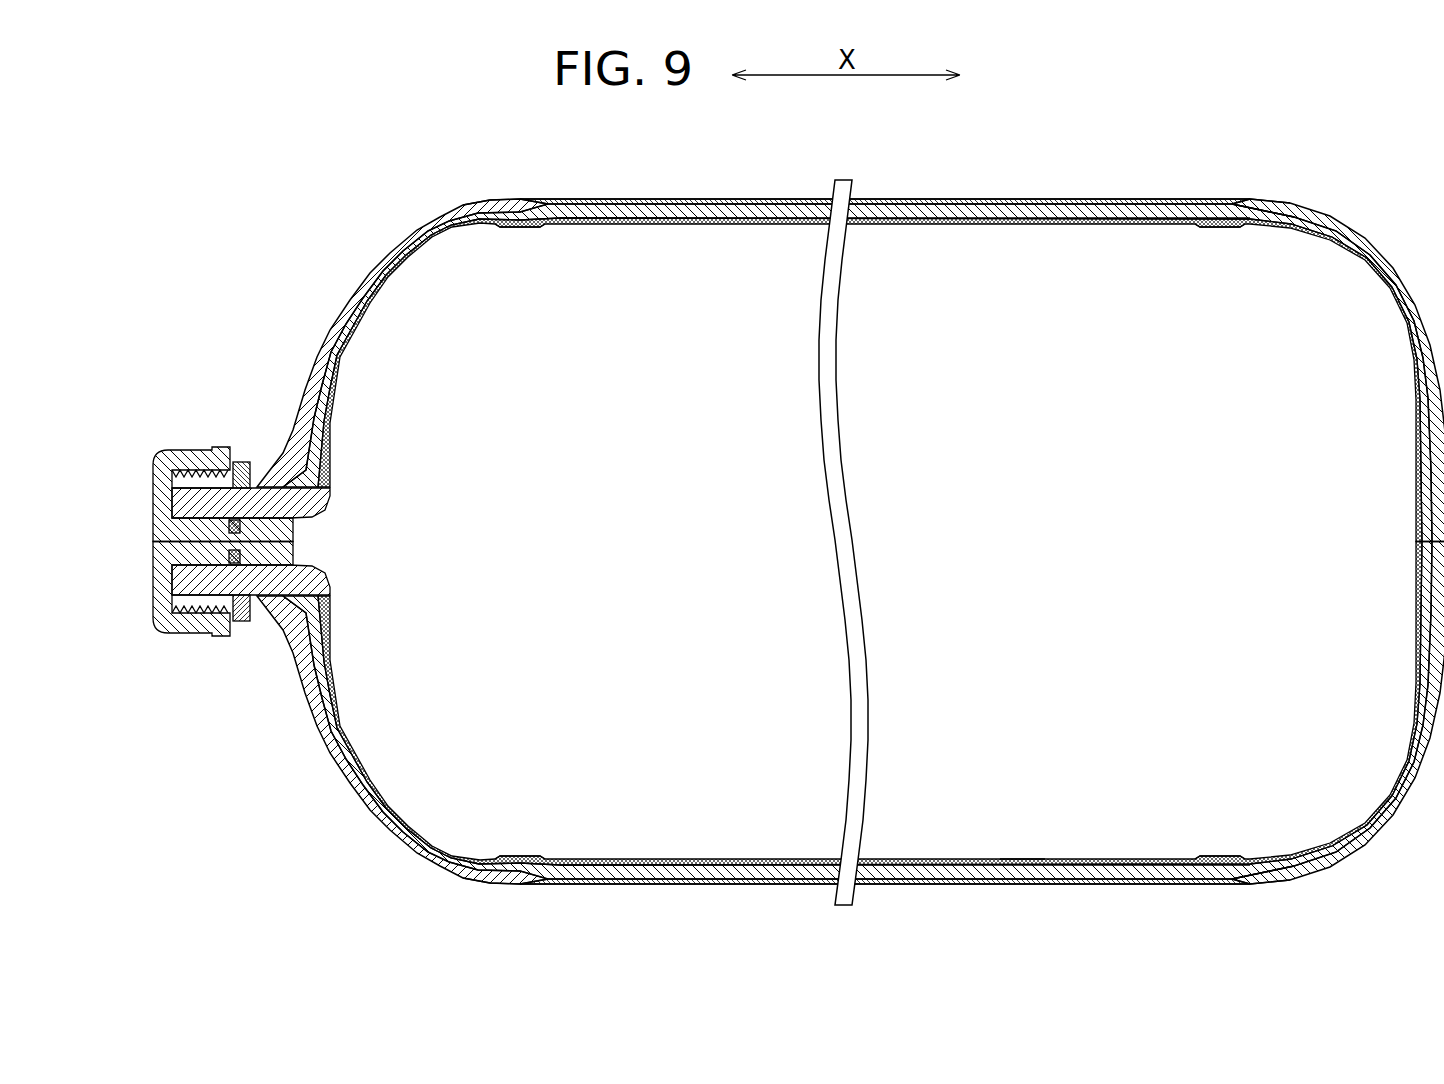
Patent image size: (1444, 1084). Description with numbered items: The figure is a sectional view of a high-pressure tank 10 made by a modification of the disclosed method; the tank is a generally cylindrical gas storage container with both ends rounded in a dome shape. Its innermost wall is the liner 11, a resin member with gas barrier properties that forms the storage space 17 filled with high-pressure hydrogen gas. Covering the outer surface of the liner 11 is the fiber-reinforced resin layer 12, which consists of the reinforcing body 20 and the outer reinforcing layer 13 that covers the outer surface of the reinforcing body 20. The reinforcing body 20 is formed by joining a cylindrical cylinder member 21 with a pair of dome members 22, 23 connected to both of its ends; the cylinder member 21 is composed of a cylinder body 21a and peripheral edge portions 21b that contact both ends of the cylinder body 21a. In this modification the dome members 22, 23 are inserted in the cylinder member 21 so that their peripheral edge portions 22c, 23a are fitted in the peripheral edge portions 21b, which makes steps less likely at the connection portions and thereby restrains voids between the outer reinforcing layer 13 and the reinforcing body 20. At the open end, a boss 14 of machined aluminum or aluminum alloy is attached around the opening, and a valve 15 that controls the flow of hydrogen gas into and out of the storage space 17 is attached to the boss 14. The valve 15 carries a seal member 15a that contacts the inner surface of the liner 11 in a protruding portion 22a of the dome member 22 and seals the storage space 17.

The high-pressure tank 10 is at (1282, 129).
The liner 11 is at (660, 224).
The fiber-reinforced resin layer 12 is at (1008, 139).
The outer reinforcing layer 13 is at (928, 200).
The reinforcing body 20 is at (985, 210).
The cylinder member 21 is at (885, 226).
The cylinder body 21a is at (1108, 225).
The peripheral edge portions 21b is at (487, 204).
The dome member 22 is at (336, 400).
The protruding portion 22a is at (210, 500).
The peripheral edge portion 22c is at (505, 227).
The dome member 23 is at (1414, 470).
The peripheral edge portion 23a is at (1237, 226).
The boss 14 is at (240, 462).
The valve 15 is at (186, 455).
The seal member 15a is at (258, 578).
The storage space 17 is at (1020, 815).